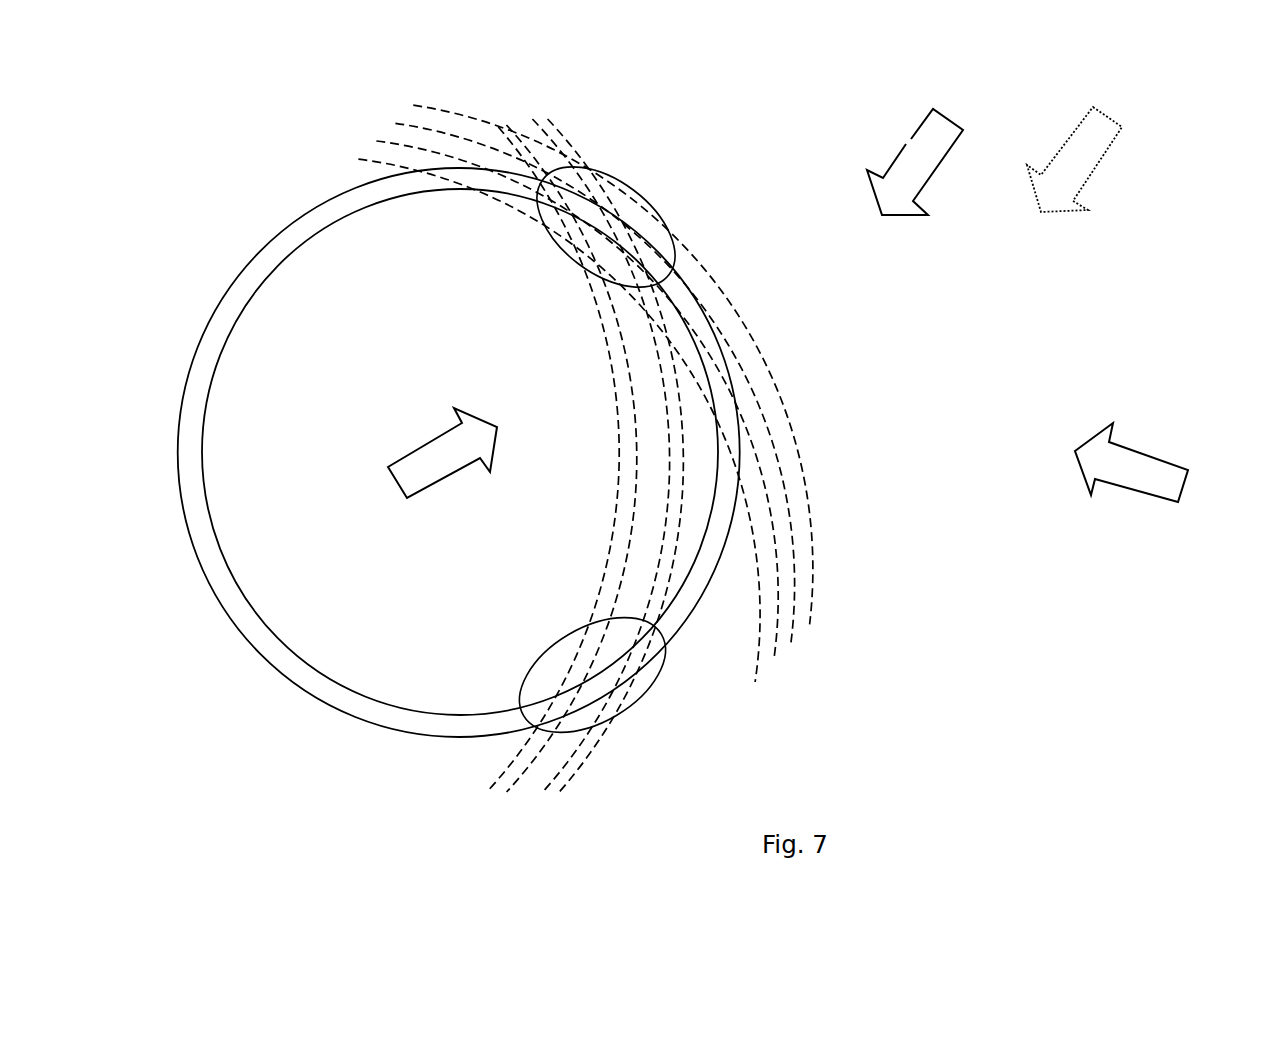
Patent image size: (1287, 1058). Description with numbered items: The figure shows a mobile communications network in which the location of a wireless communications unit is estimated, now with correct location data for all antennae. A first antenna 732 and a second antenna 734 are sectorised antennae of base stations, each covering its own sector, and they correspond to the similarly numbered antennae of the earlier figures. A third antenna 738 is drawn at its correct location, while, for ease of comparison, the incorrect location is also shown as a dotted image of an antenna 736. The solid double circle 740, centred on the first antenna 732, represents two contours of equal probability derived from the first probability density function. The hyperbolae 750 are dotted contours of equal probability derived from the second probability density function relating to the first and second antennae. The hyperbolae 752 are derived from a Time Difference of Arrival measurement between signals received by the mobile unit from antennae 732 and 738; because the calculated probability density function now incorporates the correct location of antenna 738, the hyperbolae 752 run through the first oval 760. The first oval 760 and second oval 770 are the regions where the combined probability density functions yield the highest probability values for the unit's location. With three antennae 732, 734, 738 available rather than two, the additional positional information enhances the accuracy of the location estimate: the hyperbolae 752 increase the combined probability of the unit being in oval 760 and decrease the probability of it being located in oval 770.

The first antenna 732 is at (442, 433).
The second antenna 734 is at (1125, 446).
The dotted image of an antenna 736 is at (1105, 162).
The third antenna 738 is at (930, 181).
The double circle 740 is at (300, 202).
The hyperbolae 750 is at (480, 790).
The hyperbolae 752 is at (812, 553).
The first oval 760 is at (650, 217).
The second oval 770 is at (653, 667).